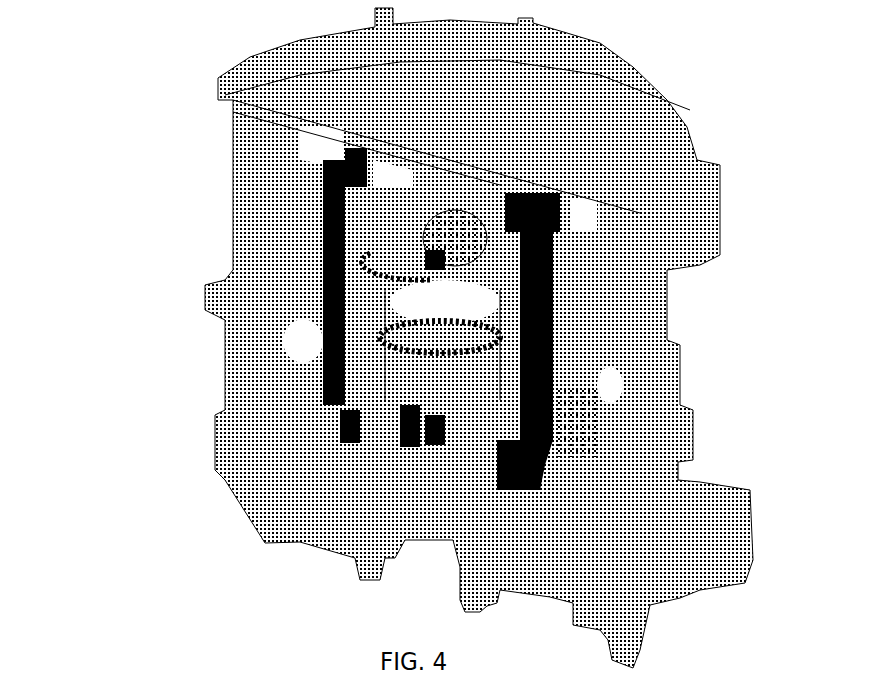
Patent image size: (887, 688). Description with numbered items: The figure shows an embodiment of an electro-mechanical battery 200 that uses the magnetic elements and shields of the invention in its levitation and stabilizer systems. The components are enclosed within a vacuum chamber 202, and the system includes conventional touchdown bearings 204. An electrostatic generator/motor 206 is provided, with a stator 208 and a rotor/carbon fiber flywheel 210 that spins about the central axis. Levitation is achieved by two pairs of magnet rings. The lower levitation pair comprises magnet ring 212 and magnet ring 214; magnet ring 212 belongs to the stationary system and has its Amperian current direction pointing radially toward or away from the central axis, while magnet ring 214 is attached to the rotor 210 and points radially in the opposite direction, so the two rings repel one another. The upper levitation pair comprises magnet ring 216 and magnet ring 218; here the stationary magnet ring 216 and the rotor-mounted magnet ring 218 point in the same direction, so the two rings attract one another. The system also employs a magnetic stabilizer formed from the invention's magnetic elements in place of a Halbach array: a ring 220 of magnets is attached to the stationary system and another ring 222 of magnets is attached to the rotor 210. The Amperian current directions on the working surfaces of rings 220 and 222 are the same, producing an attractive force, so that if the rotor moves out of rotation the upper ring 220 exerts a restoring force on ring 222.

The electro-mechanical battery 200 is at (206, 65).
The vacuum chamber 202 is at (690, 143).
The touchdown bearings 204 is at (413, 437).
The electrostatic generator/motor 206 is at (355, 280).
The stator 208 is at (387, 307).
The rotor/carbon fiber flywheel 210 is at (352, 230).
The magnet ring 212 is at (494, 465).
The magnet ring 214 is at (513, 452).
The magnet ring 216 is at (562, 226).
The magnet ring 218 is at (551, 360).
The ring of magnets 220 is at (352, 217).
The ring of magnets 222 is at (309, 340).